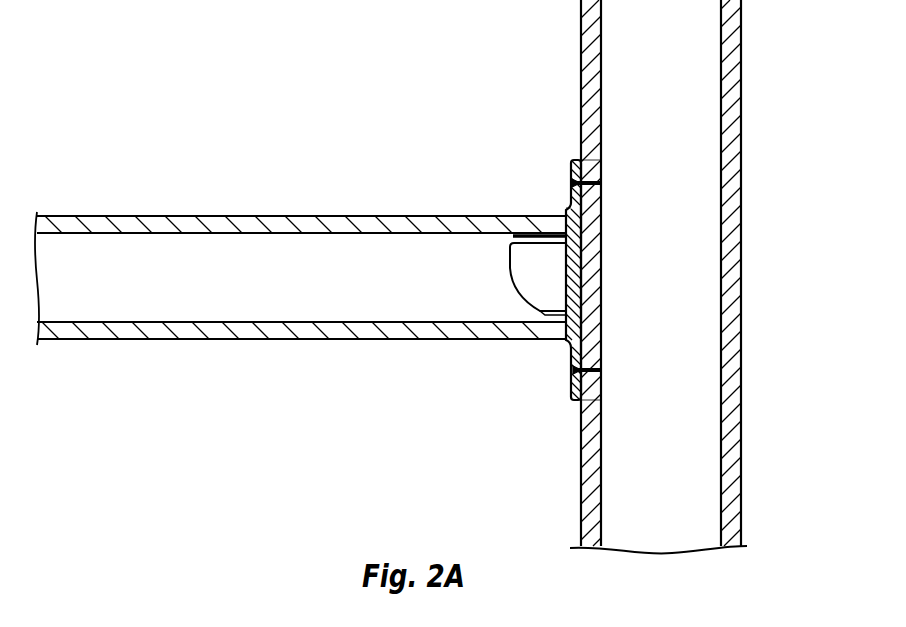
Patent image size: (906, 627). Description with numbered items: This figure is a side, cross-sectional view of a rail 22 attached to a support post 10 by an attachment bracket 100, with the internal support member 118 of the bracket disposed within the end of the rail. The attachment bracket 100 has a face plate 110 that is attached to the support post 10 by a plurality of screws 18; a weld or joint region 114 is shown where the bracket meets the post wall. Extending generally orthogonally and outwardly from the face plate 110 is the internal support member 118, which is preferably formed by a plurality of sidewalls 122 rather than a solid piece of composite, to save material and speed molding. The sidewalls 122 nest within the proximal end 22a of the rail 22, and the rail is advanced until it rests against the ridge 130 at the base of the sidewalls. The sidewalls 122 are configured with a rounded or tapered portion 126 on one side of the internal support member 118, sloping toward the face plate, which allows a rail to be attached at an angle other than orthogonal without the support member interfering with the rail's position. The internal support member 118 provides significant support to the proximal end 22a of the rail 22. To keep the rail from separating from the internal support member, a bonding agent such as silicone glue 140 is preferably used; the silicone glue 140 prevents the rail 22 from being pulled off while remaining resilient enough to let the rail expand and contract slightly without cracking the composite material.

The support post 10 is at (731, 148).
The screws 18 is at (597, 172).
The rail 22 is at (250, 217).
The proximal end of the rail 22a is at (547, 216).
The attachment bracket 100 is at (566, 256).
The face plate 110 is at (575, 159).
The weld 114 is at (598, 207).
The internal support member 118 is at (528, 270).
The sidewalls 122 is at (502, 213).
The rounded or tapered portion 126 is at (525, 303).
The ridge 130 is at (563, 341).
The silicone glue 140 is at (500, 213).